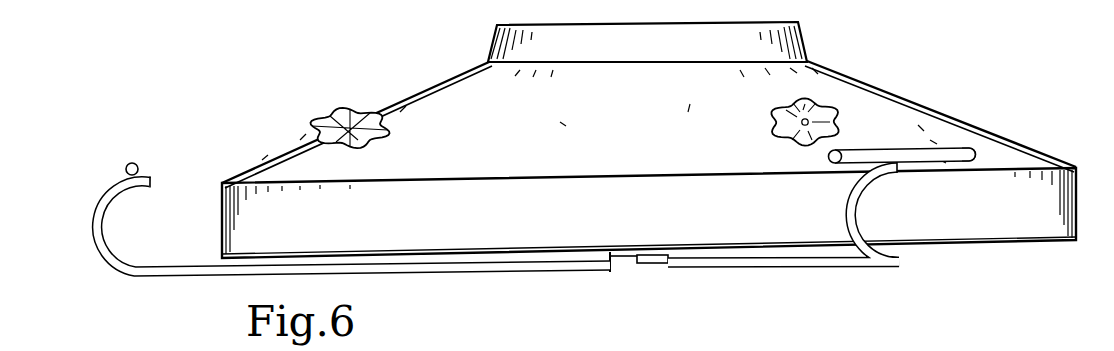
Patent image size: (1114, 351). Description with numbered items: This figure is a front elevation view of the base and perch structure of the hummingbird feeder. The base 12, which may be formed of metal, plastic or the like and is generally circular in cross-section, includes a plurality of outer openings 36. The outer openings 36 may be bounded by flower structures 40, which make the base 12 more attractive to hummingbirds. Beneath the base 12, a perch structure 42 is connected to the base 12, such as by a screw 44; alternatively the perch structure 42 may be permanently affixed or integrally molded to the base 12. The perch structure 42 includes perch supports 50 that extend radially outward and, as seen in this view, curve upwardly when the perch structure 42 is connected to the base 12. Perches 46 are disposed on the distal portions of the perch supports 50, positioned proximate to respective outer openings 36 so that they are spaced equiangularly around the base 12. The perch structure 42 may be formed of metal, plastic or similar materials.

The base 12 is at (949, 87).
The outer openings 36 is at (346, 119).
The flower structures 40 is at (388, 127).
The perch structure 42 is at (638, 272).
The screw 44 is at (664, 263).
The perches 46 is at (126, 165).
The perch supports 50 is at (121, 274).